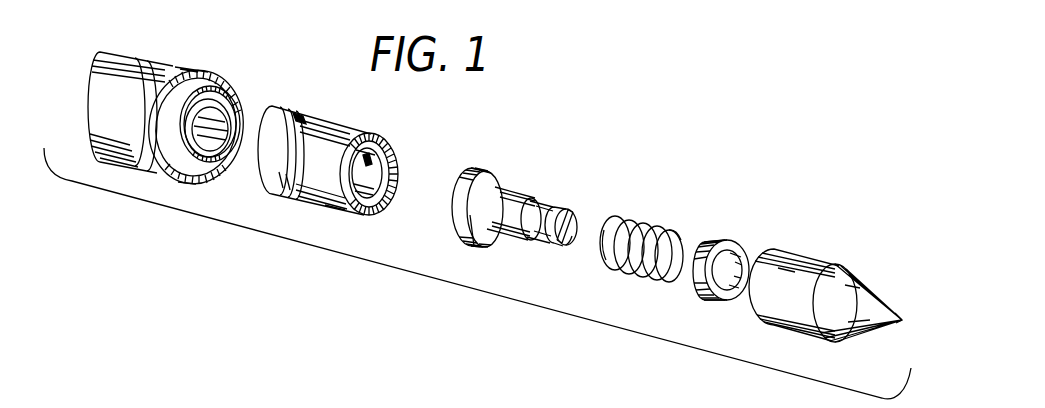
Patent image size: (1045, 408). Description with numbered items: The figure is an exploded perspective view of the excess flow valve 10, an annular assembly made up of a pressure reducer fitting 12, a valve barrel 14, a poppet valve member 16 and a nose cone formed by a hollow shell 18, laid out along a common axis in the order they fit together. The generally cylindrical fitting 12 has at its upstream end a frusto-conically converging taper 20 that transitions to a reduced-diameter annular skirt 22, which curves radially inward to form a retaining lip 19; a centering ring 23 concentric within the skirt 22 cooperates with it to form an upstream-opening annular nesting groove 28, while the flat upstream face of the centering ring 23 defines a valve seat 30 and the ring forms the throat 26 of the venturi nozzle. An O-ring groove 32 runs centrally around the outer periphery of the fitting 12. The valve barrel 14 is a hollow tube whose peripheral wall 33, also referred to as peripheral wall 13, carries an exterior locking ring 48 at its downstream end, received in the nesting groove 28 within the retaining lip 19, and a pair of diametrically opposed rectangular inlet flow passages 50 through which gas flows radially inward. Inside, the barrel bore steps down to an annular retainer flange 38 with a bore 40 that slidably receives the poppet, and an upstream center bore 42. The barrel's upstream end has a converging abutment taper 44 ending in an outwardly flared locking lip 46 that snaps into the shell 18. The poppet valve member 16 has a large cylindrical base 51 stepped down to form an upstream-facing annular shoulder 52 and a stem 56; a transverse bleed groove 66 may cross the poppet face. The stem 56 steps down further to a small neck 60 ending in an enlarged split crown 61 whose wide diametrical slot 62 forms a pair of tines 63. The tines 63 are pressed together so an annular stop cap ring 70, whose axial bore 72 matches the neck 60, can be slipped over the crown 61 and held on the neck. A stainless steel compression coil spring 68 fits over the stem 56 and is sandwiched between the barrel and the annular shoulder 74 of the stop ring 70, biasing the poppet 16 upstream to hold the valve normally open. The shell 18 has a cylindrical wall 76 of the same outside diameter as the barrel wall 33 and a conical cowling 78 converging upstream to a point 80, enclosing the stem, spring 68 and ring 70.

The excess flow valve 10 is at (386, 266).
The pressure reducer fitting 12 is at (207, 68).
The peripheral wall 13 is at (331, 210).
The valve barrel 14 is at (334, 114).
The poppet valve member 16 is at (495, 168).
The hollow shell 18 is at (801, 248).
The retaining lip 19 is at (193, 179).
The frusto-conically converging taper 20 is at (200, 82).
The annular skirt 22 is at (230, 98).
The centering ring 23 is at (180, 180).
The throat 26 is at (232, 118).
The annular nesting groove 28 is at (232, 160).
The valve seat 30 is at (220, 168).
The O-ring groove 32 is at (136, 172).
The peripheral wall 33 is at (317, 208).
The annular retainer flange 38 is at (372, 186).
The bore 40 is at (372, 165).
The center bore 42 is at (380, 200).
The abutment taper 44 is at (356, 213).
The locking lip 46 is at (371, 156).
The locking ring 48 is at (274, 199).
The inlet flow passages 50 is at (300, 113).
The cylindrical base 51 is at (473, 247).
The annular shoulder 52 is at (495, 247).
The stem 56 is at (531, 199).
The neck 60 is at (553, 238).
The split crown 61 is at (568, 249).
The slot 62 is at (574, 214).
The tines 63 is at (578, 232).
The bleed groove 66 is at (457, 205).
The compression coil spring 68 is at (654, 224).
The stop cap ring 70 is at (724, 239).
The axial bore 72 is at (738, 256).
The annular shoulder 74 is at (697, 291).
The cylindrical wall 76 is at (772, 325).
The conical cowling 78 is at (852, 339).
The point 80 is at (902, 318).